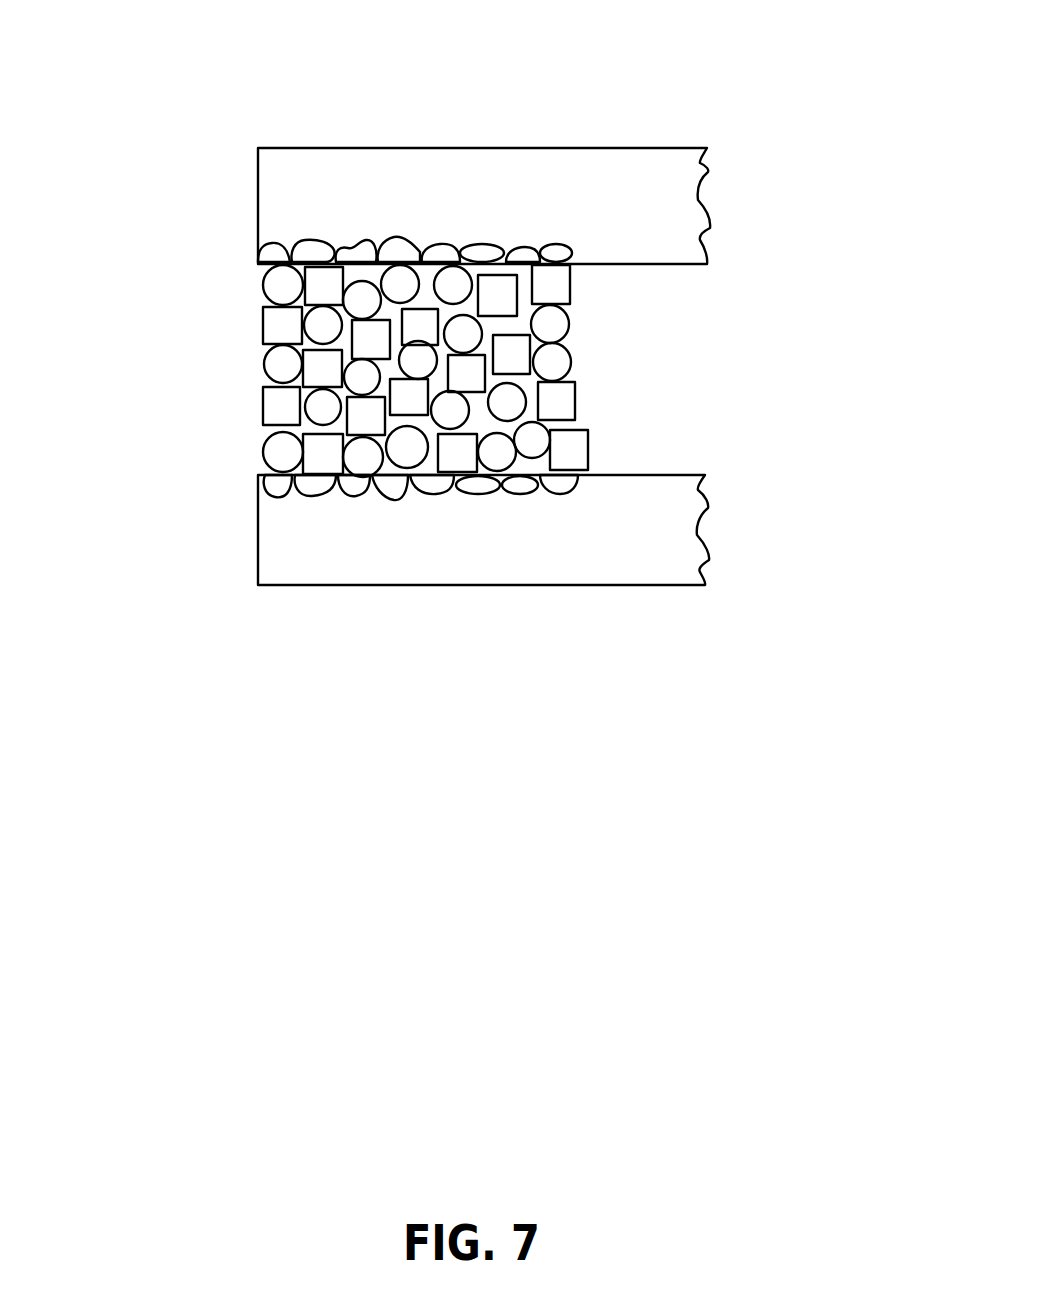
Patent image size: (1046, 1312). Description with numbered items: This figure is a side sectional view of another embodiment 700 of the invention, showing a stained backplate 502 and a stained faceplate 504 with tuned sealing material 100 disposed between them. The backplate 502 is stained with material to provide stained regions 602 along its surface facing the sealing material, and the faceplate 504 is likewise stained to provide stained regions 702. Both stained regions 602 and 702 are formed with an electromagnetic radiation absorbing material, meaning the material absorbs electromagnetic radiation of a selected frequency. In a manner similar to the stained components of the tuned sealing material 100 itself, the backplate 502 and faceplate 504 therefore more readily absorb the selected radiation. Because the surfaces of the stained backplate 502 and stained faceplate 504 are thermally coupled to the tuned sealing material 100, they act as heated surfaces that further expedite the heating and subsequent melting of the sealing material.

The embodiment 700 is at (690, 98).
The backplate 502 is at (303, 183).
The faceplate 504 is at (395, 555).
The stained regions 602 is at (555, 243).
The stained regions 702 is at (532, 481).
The tuned sealing material 100 is at (240, 470).